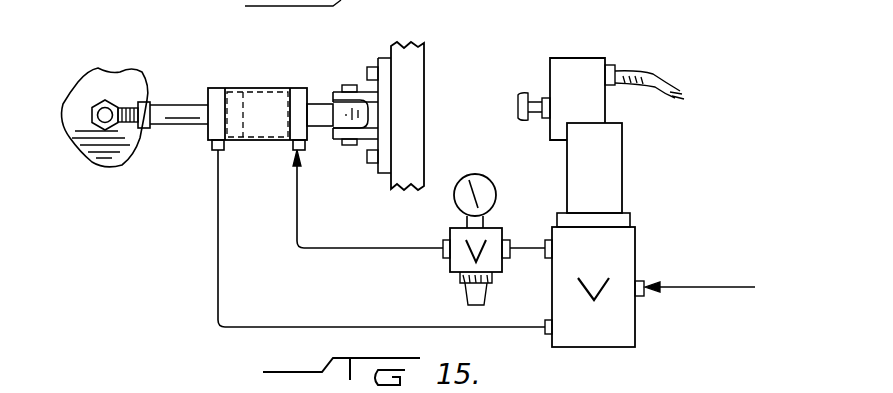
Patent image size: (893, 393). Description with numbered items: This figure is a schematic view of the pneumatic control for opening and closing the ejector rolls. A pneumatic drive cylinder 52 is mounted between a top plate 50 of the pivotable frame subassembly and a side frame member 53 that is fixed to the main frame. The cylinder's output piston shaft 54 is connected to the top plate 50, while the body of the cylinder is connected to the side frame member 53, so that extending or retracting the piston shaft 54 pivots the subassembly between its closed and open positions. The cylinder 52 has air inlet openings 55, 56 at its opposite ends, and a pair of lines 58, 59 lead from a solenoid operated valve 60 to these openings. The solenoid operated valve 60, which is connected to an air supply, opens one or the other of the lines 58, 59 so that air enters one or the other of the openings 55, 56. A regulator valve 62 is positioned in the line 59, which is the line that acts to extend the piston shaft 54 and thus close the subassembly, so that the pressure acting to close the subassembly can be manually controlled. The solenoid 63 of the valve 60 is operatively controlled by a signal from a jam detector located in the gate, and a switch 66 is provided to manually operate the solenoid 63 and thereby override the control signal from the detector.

The top plate 50 is at (83, 143).
The pneumatic drive cylinder 52 is at (267, 87).
The side frame member 53 is at (413, 93).
The output piston shaft 54 is at (173, 107).
The air inlet opening 55 is at (208, 144).
The air inlet opening 56 is at (292, 146).
The line 58 is at (216, 287).
The line 59 is at (336, 248).
The solenoid operated valve 60 is at (617, 253).
The regulator valve 62 is at (490, 232).
The solenoid 63 is at (612, 148).
The switch 66 is at (560, 78).